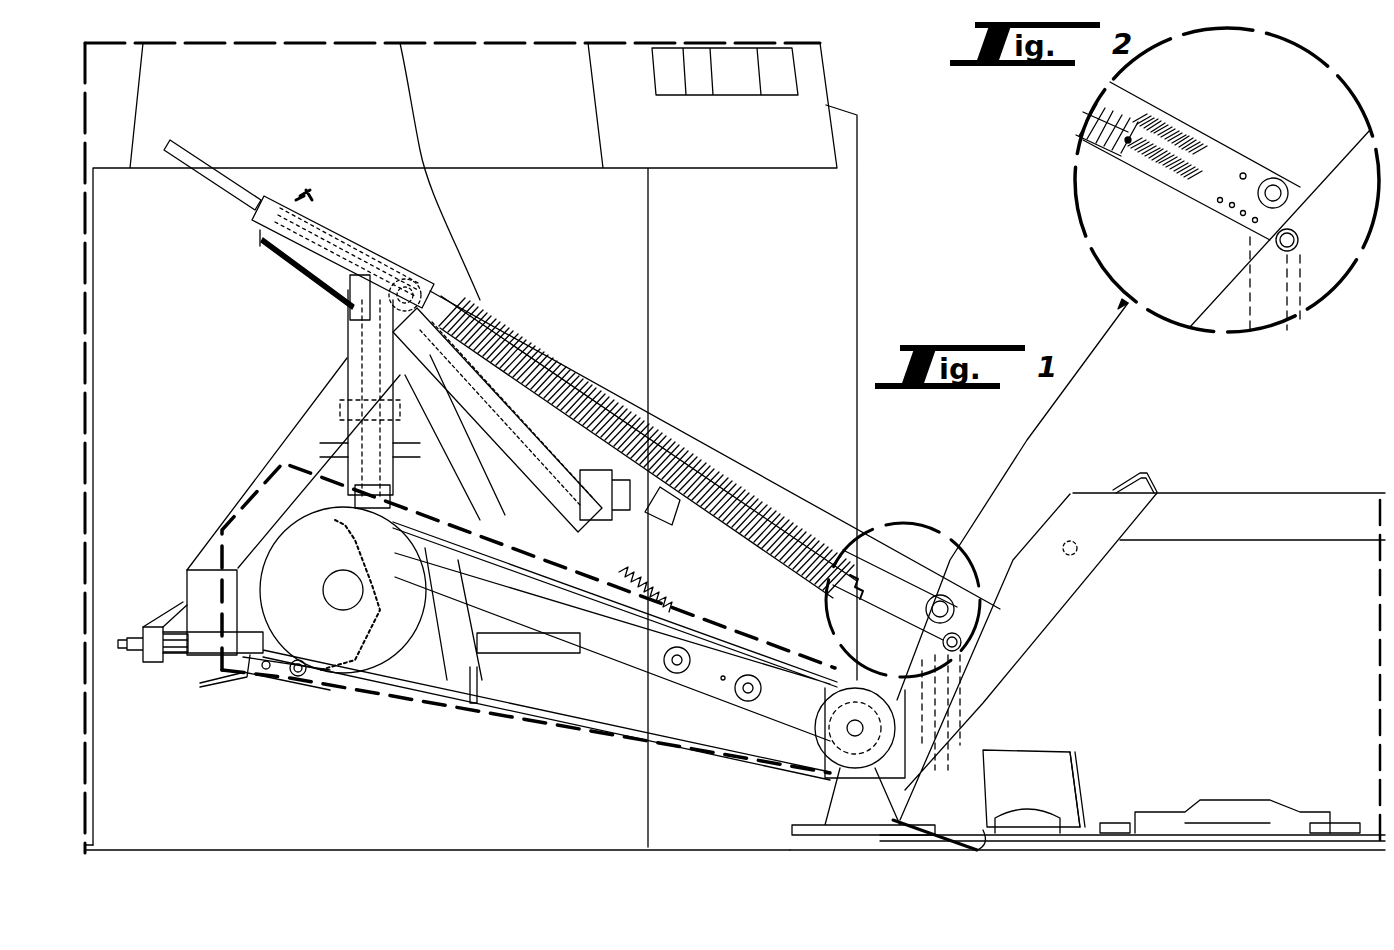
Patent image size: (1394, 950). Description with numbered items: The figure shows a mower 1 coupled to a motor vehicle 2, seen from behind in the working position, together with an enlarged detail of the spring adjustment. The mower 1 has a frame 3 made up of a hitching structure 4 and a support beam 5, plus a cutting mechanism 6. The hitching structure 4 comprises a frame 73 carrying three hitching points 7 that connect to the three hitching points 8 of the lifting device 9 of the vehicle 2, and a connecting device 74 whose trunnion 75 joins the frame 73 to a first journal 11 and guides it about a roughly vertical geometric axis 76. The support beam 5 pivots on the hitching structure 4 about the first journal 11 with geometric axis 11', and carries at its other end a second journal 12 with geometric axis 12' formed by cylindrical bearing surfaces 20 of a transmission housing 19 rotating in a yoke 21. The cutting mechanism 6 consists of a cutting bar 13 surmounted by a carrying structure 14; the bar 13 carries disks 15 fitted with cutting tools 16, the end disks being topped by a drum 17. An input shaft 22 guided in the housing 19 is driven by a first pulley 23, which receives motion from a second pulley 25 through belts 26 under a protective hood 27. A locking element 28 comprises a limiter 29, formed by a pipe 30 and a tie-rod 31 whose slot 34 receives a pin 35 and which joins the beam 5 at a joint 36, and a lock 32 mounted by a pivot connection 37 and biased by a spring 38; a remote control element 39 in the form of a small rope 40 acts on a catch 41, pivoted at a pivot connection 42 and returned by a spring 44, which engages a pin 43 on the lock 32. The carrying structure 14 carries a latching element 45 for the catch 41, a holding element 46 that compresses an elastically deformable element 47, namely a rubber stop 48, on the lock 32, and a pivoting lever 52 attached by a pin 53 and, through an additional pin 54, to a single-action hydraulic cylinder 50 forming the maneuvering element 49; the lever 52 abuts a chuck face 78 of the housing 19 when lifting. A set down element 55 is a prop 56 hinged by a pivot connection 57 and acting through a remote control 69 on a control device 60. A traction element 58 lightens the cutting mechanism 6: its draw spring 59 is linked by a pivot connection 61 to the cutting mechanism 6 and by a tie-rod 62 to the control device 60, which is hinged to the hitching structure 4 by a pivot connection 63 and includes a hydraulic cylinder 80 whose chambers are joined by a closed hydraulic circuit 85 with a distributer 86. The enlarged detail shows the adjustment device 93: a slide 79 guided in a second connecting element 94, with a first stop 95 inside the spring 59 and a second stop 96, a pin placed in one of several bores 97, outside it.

In FIG. 1, the mower 1 is at (1292, 398).
In FIG. 1, the motor vehicle 2 is at (823, 209).
In FIG. 1, the frame 3 is at (640, 665).
In FIG. 1, the hitching structure 4 is at (300, 416).
In FIG. 1, the support beam 5 is at (625, 682).
In FIG. 1, the cutting mechanism 6 is at (1322, 490).
In FIG. 1, the hitching points 7 is at (177, 662).
In FIG. 1, the hitching points 8 is at (130, 636).
In FIG. 1, the lifting device 9 is at (170, 610).
In FIG. 1, the first journal 11 is at (267, 459).
In FIG. 1, the geometric axis 11' is at (343, 590).
In FIG. 1, the second journal 12 is at (802, 747).
In FIG. 1, the geometric axis 12' is at (949, 803).
In FIG. 1, the cutting bar 13 is at (1240, 853).
In FIG. 1, the carrying structure 14 is at (1265, 500).
In FIG. 1, the disks 15 is at (1225, 812).
In FIG. 1, the cutting tools 16 is at (1350, 822).
In FIG. 1, the drum 17 is at (1050, 758).
In FIG. 1, the transmission housing 19 is at (896, 828).
In FIG. 1, the cylindrical bearing surfaces 20 is at (865, 835).
In FIG. 1, the yoke 21 is at (703, 681).
In FIG. 1, the input shaft 22 is at (845, 745).
In FIG. 1, the first pulley 23 is at (820, 717).
In FIG. 1, the second pulley 25 is at (337, 672).
In FIG. 1, the belts 26 is at (490, 707).
In FIG. 1, the protective hood 27 is at (540, 733).
In FIG. 1, the locking element 28 is at (555, 430).
In FIG. 1, the limiter 29 is at (480, 430).
In FIG. 1, the pipe 30 is at (440, 320).
In FIG. 1, the tie-rod 31 is at (550, 531).
In FIG. 1, the lock 32 is at (625, 478).
In FIG. 1, the slot 34 is at (470, 312).
In FIG. 1, the pin 35 is at (376, 457).
In FIG. 1, the joint 36 is at (522, 578).
In FIG. 1, the pivot connection 37 is at (600, 650).
In FIG. 1, the spring 38 is at (513, 680).
In FIG. 1, the remote control element 39 is at (418, 100).
In FIG. 1, the small rope 40 is at (424, 162).
In FIG. 1, the catch 41 is at (677, 508).
In FIG. 1, the pivot connection 42 is at (620, 740).
In FIG. 1, the pin 43 is at (588, 530).
In FIG. 1, the spring 44 is at (657, 588).
In FIG. 1, the latching element 45 is at (1066, 542).
In FIG. 1, the holding element 46 is at (1150, 477).
In FIG. 1, the elastically deformable element 47 is at (683, 497).
In FIG. 1, the rubber stop 48 is at (620, 490).
In FIG. 1, the maneuvering element 49 is at (525, 311).
In FIG. 1, the single-action hydraulic cylinder 50 is at (553, 363).
In FIG. 1, the pivoting lever 52 is at (960, 617).
In FIG. 1, the pin 53 is at (1034, 788).
In FIG. 1, the additional pin 54 is at (940, 593).
In FIG. 1, the set down element 55 is at (310, 690).
In FIG. 1, the prop 56 is at (372, 683).
In FIG. 1, the pivot connection 57 is at (293, 685).
In FIG. 1, the traction element 58 is at (599, 387).
In FIG. 1, the draw spring 59 is at (737, 483).
In FIG. 2, the draw spring 59 is at (1133, 172).
In FIG. 1, the control device 60 is at (266, 186).
In FIG. 1, the pivot connection 61 is at (1055, 637).
In FIG. 2, the pivot connection 61 is at (1300, 240).
In FIG. 1, the tie-rod 62 is at (428, 305).
In FIG. 1, the pivot connection 63 is at (400, 275).
In FIG. 1, the remote control 69 is at (347, 417).
In FIG. 1, the frame 73 is at (248, 488).
In FIG. 1, the connecting device 74 is at (348, 342).
In FIG. 1, the trunnion 75 is at (342, 400).
In FIG. 1, the geometric axis 76 is at (366, 510).
In FIG. 1, the chuck face 78 is at (980, 707).
In FIG. 1, the slide 79 is at (893, 600).
In FIG. 2, the slide 79 is at (1170, 163).
In FIG. 1, the hydraulic cylinder 80 is at (340, 243).
In FIG. 1, the closed hydraulic circuit 85 is at (262, 252).
In FIG. 1, the distributer 86 is at (348, 312).
In FIG. 1, the adjustment device 93 is at (884, 548).
In FIG. 2, the adjustment device 93 is at (1267, 113).
In FIG. 2, the second connecting element 94 is at (1177, 195).
In FIG. 2, the first stop 95 is at (1127, 145).
In FIG. 2, the second stop 96 is at (1263, 190).
In FIG. 2, the bores 97 is at (1256, 223).